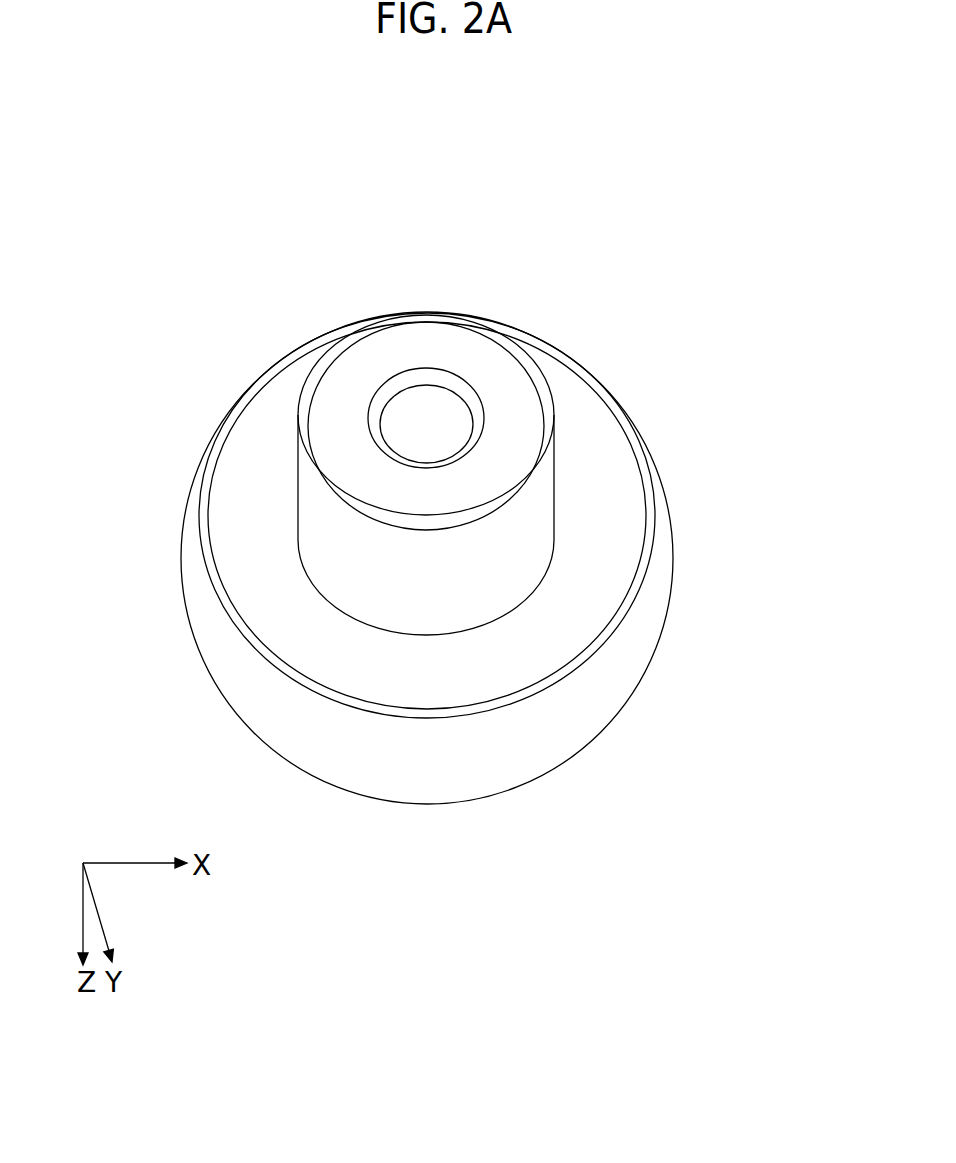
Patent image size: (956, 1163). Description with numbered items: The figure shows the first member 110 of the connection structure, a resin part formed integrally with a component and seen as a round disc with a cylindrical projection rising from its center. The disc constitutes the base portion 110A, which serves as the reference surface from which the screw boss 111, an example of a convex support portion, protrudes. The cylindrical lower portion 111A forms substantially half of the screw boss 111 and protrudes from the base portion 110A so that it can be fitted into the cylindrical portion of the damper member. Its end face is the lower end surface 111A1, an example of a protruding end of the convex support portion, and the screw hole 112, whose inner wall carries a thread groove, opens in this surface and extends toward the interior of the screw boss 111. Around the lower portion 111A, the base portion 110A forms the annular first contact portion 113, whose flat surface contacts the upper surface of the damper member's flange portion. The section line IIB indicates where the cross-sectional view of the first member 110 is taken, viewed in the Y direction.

The first member 110 is at (712, 150).
The base portion 110A is at (255, 548).
The screw boss 111 is at (490, 385).
The lower portion 111A is at (525, 523).
The lower end surface 111A1 is at (520, 403).
The screw hole 112 is at (415, 400).
The first contact portion 113 is at (255, 467).
The line IIB- IIB is at (173, 593).